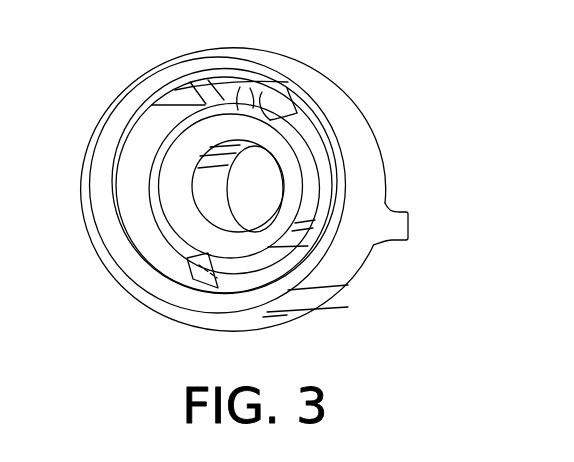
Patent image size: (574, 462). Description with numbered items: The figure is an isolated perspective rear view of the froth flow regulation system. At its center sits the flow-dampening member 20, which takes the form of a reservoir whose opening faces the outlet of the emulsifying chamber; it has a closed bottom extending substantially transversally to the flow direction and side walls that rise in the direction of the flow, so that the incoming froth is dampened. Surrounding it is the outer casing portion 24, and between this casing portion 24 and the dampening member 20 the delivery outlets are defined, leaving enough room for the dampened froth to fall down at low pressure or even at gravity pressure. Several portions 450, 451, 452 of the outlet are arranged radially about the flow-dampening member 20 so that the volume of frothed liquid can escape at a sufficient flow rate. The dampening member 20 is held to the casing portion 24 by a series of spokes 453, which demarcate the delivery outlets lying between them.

The casing portion 24 is at (358, 121).
The flow-dampening member 20 is at (305, 216).
The portion of outlet 450 is at (203, 107).
The portion of outlet 451 is at (290, 98).
The portion of outlet 452 is at (223, 258).
The spokes 453 is at (242, 85).